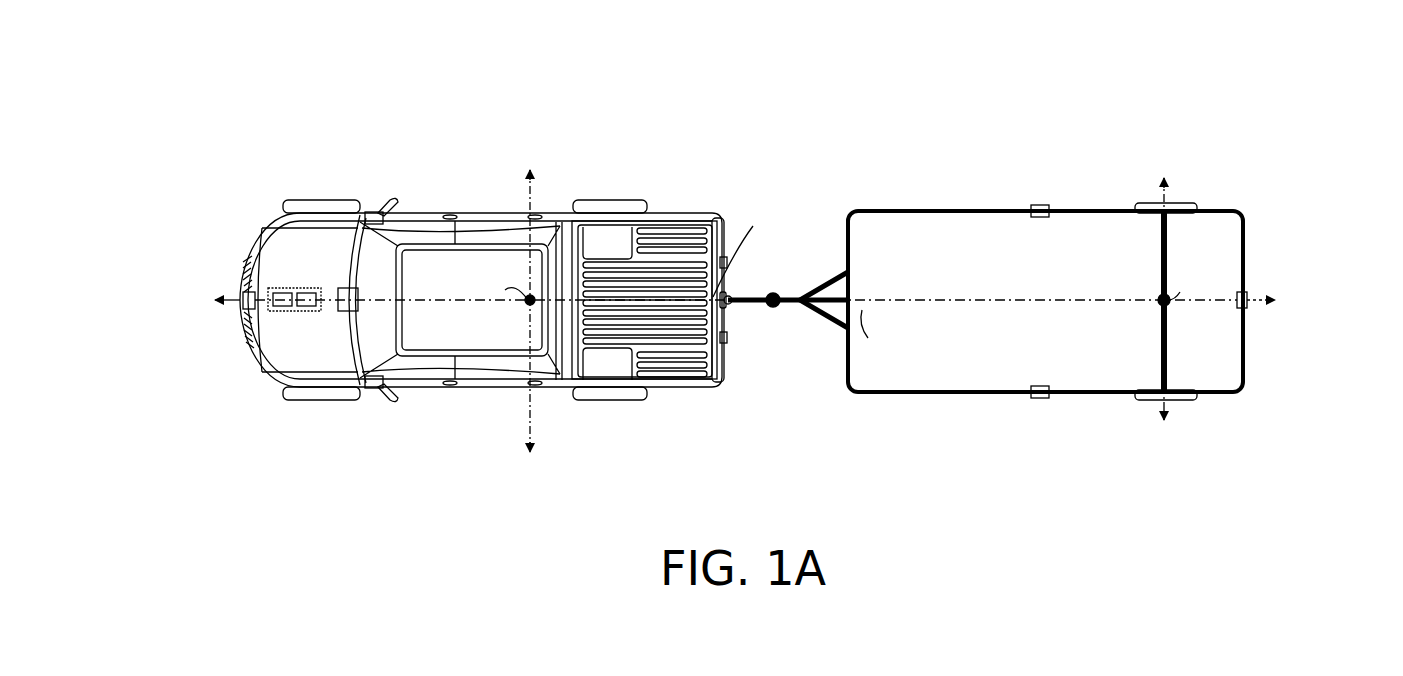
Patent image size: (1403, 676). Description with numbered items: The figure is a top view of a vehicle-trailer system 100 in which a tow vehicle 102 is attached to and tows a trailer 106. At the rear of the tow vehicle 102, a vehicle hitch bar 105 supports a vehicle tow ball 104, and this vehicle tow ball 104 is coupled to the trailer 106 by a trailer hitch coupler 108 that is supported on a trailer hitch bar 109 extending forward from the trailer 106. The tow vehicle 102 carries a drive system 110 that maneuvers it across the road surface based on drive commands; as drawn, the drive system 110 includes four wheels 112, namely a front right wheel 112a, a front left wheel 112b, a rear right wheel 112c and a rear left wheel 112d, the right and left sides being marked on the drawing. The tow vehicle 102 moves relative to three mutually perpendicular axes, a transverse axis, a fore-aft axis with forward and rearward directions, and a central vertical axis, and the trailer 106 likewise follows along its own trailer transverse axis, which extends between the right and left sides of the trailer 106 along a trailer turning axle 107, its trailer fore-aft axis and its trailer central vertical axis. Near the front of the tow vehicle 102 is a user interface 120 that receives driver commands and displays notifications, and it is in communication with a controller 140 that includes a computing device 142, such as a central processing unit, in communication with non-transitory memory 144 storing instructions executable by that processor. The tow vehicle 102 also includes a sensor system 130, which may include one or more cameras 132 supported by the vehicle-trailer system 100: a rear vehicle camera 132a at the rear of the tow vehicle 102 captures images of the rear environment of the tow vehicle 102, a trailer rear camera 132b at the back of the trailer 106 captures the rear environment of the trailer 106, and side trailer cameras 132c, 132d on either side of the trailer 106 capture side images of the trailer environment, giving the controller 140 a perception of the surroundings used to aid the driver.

The vehicle-trailer system 100 is at (738, 50).
The tow vehicle 102 is at (285, 192).
The vehicle tow ball 104 is at (778, 306).
The vehicle hitch bar 105 is at (732, 305).
The trailer 106 is at (1025, 186).
The trailer turning axle 107 is at (1160, 246).
The trailer hitch coupler 108 is at (777, 296).
The trailer hitch bar 109 is at (810, 297).
The drive system 110 is at (1150, 202).
The wheel 112 is at (1145, 401).
The front right wheel 112a is at (313, 200).
The front left wheel 112b is at (305, 400).
The rear right wheel 112c is at (612, 200).
The rear left wheel 112d is at (610, 400).
The user interface 120 is at (352, 295).
The sensor system 130 is at (243, 298).
The camera 132 is at (1151, 328).
The rear vehicle camera 132a is at (733, 307).
The trailer rear camera 132b is at (1247, 305).
The side trailer camera 132c is at (1040, 218).
The side trailer camera 132d is at (1040, 398).
The controller 140 is at (301, 298).
The computing device 142 is at (285, 312).
The non-transitory memory 144 is at (310, 312).